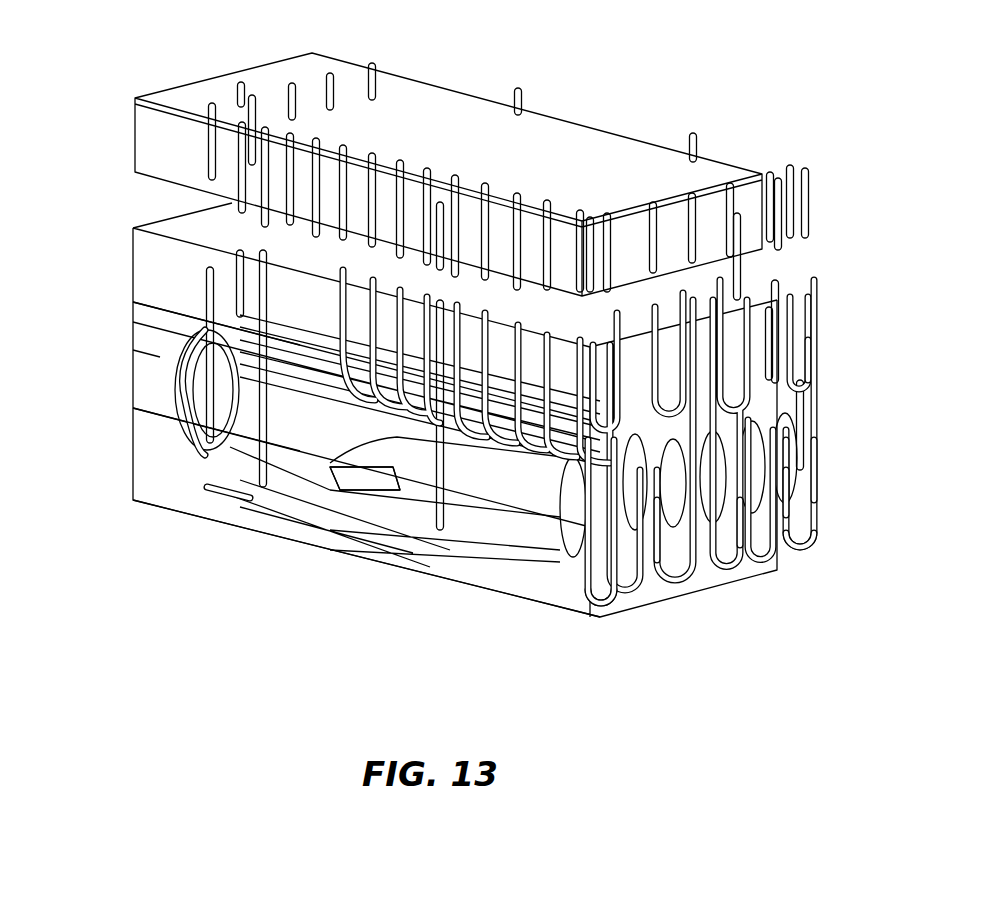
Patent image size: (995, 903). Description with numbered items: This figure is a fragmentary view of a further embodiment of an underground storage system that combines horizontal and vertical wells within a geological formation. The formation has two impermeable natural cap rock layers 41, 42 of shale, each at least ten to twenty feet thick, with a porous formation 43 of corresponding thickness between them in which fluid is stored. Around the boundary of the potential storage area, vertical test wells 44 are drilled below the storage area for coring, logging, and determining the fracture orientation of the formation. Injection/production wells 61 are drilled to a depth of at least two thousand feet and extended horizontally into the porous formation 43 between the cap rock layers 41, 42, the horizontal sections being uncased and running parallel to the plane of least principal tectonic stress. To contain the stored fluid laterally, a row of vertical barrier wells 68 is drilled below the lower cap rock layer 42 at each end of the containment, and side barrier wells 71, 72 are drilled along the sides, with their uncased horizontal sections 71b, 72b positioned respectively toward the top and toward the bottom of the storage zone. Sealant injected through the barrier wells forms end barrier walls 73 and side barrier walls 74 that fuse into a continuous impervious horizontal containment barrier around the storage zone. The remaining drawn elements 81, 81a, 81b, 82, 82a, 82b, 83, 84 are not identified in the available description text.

The upper cap rock layer 41 is at (147, 318).
The lower cap rock layer 42 is at (140, 420).
The porous formation 43 is at (147, 375).
The vertical test wells 44 is at (241, 82).
The injection/production wells 61 is at (427, 175).
The vertical barrier wells 68 is at (212, 103).
The first side barrier well 71 is at (590, 215).
The horizontal section of first side barrier well 71b is at (183, 360).
The second side barrier well 72 is at (613, 213).
The horizontal section of second side barrier well 72b is at (490, 548).
The end barrier wall 73 is at (787, 493).
The side barrier wall 74 is at (323, 447).
The first coil wire 81 is at (677, 374).
The first coil wire leg 81a is at (817, 317).
The first coil wire bent leg 81b is at (797, 377).
The second coil wire 82 is at (813, 423).
The second coil wire leg 82a is at (813, 483).
The second coil wire U-bend 82b is at (787, 547).
The magnetic core 83 is at (703, 333).
The housing bottom edge 84 is at (565, 602).